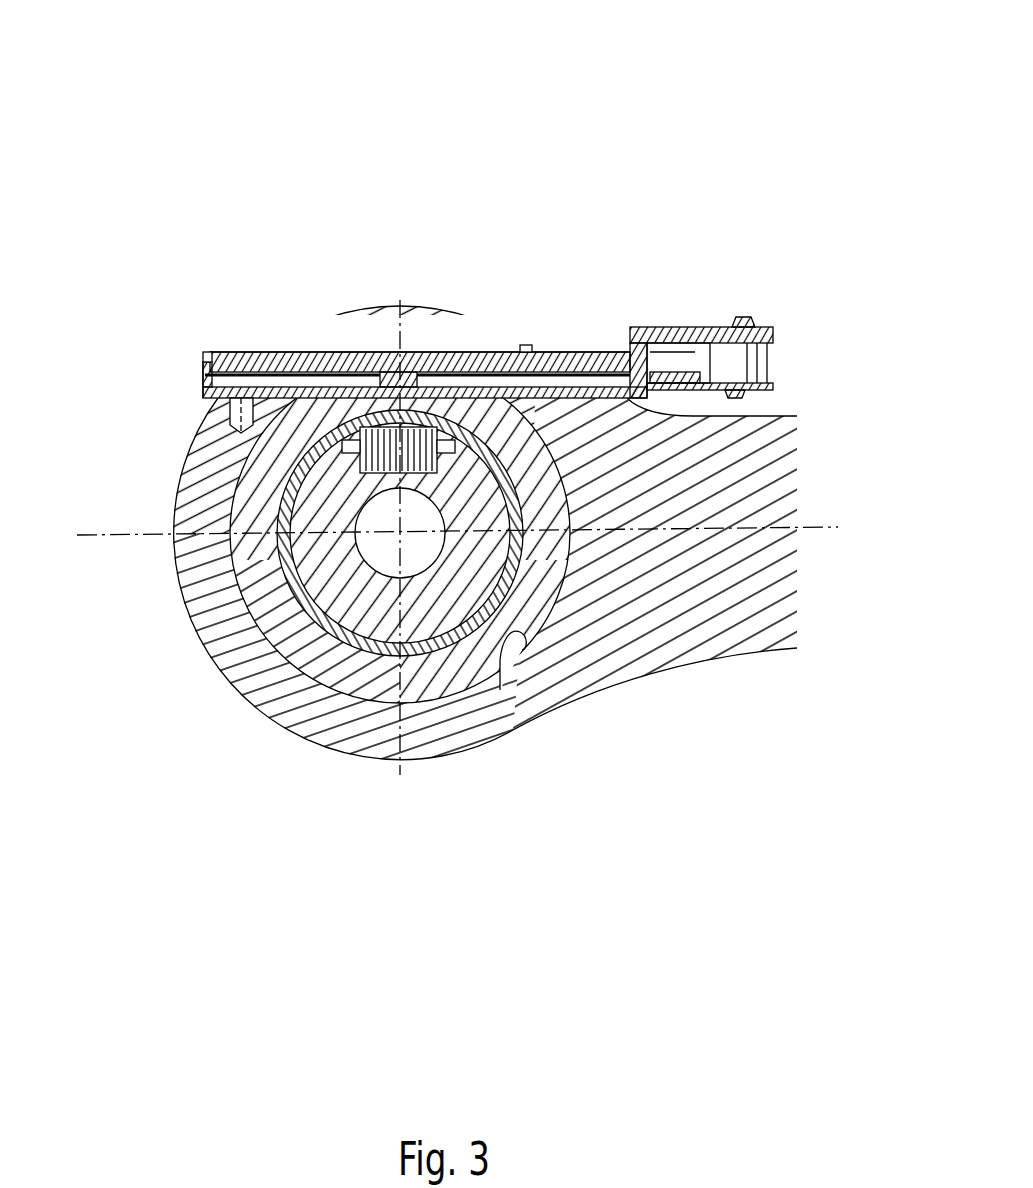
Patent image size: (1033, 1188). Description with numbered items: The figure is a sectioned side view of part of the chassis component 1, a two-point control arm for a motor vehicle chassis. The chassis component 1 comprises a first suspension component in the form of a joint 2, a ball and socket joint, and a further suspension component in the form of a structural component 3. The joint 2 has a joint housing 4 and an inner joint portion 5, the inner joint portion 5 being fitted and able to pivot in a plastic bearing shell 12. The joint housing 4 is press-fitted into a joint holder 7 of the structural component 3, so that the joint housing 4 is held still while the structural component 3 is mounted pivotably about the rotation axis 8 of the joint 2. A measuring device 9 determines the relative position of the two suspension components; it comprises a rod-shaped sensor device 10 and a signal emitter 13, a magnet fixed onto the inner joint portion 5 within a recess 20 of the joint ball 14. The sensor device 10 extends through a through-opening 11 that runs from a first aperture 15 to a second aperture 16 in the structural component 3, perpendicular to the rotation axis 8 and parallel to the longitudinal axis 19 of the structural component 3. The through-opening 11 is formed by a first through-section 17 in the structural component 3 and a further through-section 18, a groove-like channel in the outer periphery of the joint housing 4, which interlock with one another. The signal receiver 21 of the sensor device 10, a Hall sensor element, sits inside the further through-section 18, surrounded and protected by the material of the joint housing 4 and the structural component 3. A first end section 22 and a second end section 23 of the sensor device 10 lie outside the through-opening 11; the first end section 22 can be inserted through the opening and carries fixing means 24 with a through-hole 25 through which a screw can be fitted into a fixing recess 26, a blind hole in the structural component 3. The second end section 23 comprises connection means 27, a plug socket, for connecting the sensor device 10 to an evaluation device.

The chassis component 1 is at (437, 380).
The joint 2 is at (210, 577).
The structural component 3 is at (755, 662).
The joint housing 4 is at (263, 590).
The inner joint portion 5 is at (345, 605).
The joint holder 7 is at (500, 690).
The rotation axis 8 is at (405, 555).
The measuring device 9 is at (243, 297).
The sensor device 10 is at (200, 352).
The through-opening 11 is at (548, 337).
The bearing shell 12 is at (340, 640).
The signal emitter 13 is at (340, 462).
The joint ball 14 is at (385, 657).
The first aperture 15 is at (270, 348).
The second aperture 16 is at (525, 335).
The first through-section 17 is at (322, 345).
The further through-section 18 is at (243, 447).
The longitudinal axis 19 is at (822, 528).
The recess 20 is at (317, 513).
The signal receiver 21 is at (412, 348).
The first end section 22 is at (208, 345).
The second end section 23 is at (670, 325).
The fixing means 24 is at (242, 345).
The through-hole 25 is at (205, 362).
The fixing recess 26 is at (215, 392).
The connection means 27 is at (748, 325).